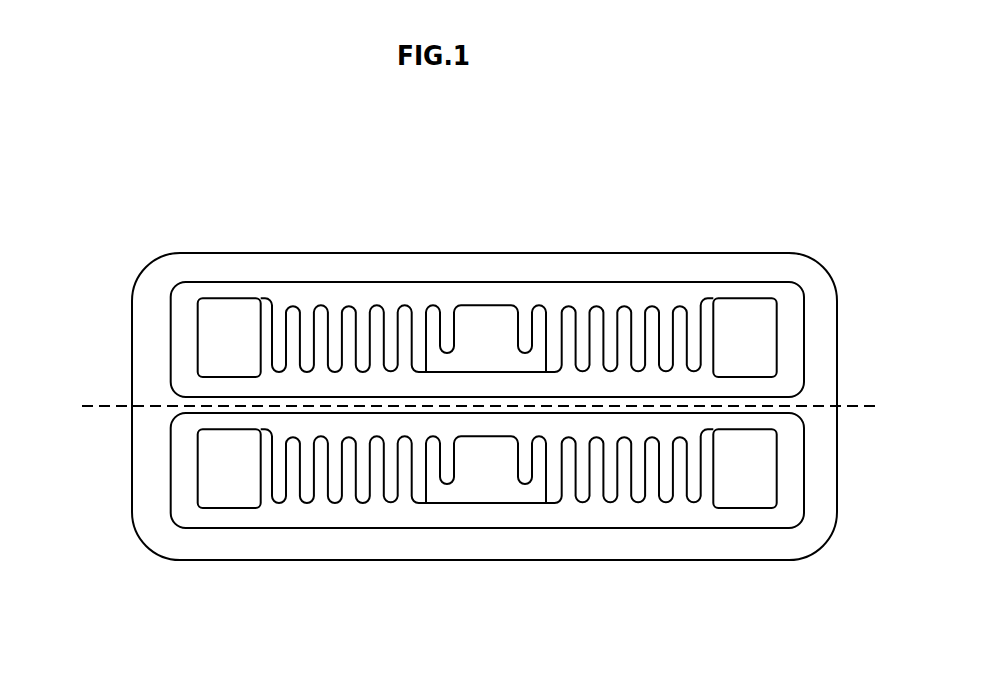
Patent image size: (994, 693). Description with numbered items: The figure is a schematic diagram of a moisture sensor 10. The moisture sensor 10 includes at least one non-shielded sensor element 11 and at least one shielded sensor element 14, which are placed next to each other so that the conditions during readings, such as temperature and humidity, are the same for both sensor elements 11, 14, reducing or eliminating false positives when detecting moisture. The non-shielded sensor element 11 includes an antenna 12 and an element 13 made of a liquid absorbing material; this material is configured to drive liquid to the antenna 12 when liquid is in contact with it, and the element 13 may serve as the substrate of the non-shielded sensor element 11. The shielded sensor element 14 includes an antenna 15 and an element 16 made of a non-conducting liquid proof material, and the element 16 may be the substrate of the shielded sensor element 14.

The moisture sensor 10 is at (722, 163).
The non-shielded sensor element 11 is at (303, 221).
The antenna 12 is at (580, 277).
The element made of a liquid absorbing material 13 is at (138, 342).
The shielded sensor element 14 is at (423, 585).
The antenna 15 is at (316, 529).
The element made of a non-conducting liquid proof material 16 is at (805, 540).